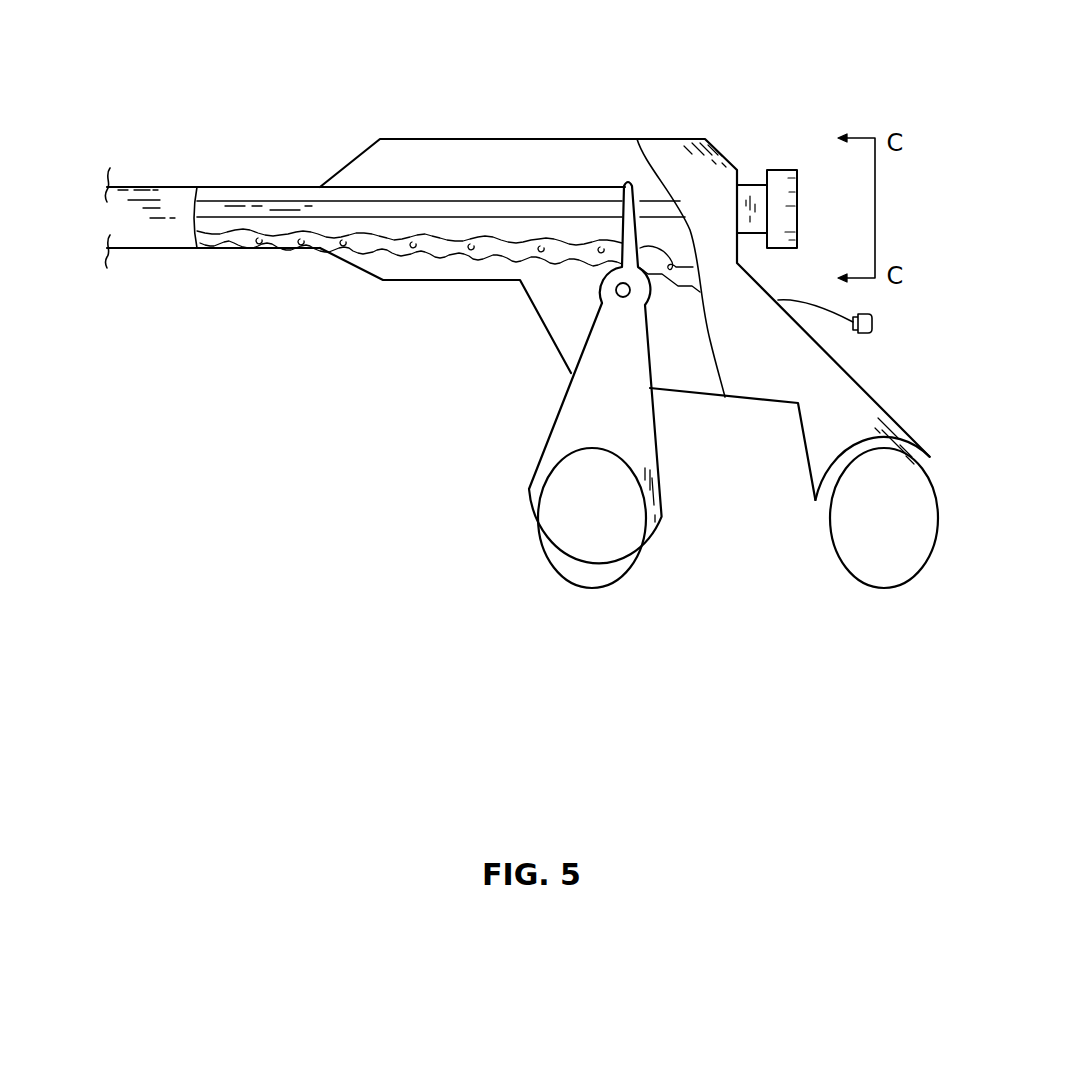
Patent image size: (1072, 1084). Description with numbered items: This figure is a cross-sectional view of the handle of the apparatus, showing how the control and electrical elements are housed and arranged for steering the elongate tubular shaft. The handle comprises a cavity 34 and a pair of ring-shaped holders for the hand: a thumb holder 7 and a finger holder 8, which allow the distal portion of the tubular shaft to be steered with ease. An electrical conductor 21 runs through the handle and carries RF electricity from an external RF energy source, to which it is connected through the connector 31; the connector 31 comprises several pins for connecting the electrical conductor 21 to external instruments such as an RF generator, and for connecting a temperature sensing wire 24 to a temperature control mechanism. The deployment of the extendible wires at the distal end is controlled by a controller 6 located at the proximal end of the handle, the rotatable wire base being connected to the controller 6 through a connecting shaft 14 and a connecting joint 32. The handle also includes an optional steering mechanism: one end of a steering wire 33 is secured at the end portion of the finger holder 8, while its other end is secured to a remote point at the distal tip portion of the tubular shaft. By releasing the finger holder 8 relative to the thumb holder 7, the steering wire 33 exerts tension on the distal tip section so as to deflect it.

The steering wire 33 is at (393, 190).
The connecting shaft 14 is at (490, 208).
The electrical conductor 21 is at (372, 233).
The temperature sensing wire 24 is at (215, 243).
The cavity 34 is at (547, 285).
The finger holder 8 is at (628, 553).
The thumb holder 7 is at (928, 527).
The connecting joint 32 is at (745, 182).
The controller 6 is at (780, 168).
The connector 31 is at (882, 312).